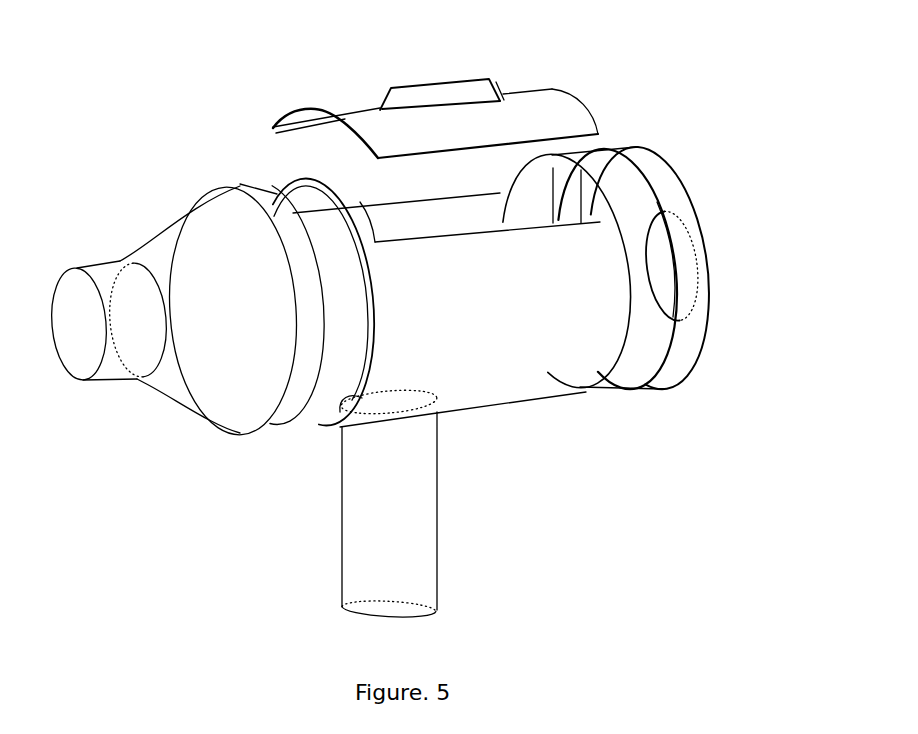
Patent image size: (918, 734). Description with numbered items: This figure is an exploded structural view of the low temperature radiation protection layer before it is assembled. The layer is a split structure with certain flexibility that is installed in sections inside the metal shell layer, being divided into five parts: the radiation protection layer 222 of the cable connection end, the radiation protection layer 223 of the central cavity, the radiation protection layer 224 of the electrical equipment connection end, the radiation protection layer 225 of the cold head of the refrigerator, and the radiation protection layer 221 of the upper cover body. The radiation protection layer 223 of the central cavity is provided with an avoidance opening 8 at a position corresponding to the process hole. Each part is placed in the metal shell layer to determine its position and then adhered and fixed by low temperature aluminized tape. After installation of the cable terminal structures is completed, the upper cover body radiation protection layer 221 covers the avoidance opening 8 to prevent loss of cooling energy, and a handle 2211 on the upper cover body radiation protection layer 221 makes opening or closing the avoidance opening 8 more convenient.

The avoidance opening 8 is at (493, 212).
The upper cover body radiation protection layer 221 is at (457, 112).
The handle 2211 is at (493, 80).
The radiation protection layer of cable connection end 222 is at (127, 293).
The radiation protection layer of central cavity 223 is at (330, 178).
The radiation protection layer of electrical equipment connection end 224 is at (668, 181).
The radiation protection layer of cold head of refrigerator 225 is at (410, 493).